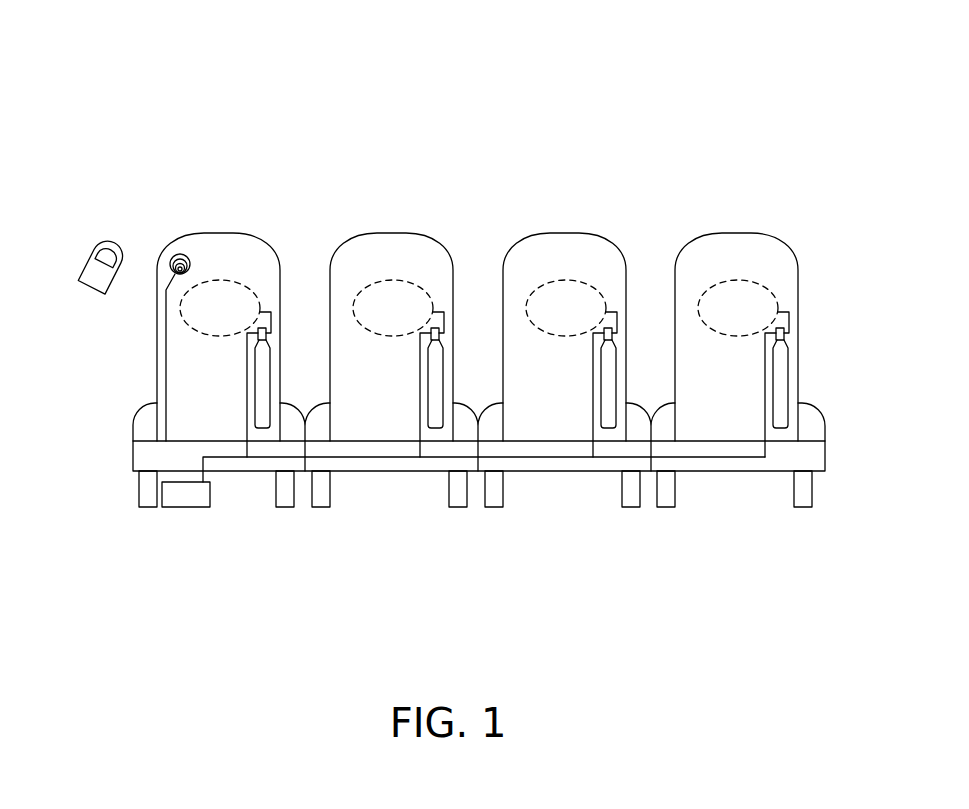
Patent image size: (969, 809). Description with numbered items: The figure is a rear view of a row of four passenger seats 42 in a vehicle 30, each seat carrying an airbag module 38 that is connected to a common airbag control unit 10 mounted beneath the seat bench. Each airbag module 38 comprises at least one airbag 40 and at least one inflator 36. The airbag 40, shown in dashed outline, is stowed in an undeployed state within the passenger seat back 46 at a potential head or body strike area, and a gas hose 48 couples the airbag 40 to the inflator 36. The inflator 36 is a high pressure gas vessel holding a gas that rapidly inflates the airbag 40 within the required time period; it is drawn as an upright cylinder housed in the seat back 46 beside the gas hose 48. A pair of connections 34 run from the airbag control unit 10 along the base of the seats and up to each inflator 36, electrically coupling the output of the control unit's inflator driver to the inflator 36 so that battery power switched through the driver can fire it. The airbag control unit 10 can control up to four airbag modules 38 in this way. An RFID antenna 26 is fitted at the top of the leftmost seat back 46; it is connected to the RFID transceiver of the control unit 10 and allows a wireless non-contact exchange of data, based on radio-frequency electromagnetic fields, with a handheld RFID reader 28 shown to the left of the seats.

The airbag control unit 10 is at (191, 495).
The RFID antenna 26 is at (180, 254).
The RFID reader 28 is at (93, 268).
The vehicle 30 is at (590, 151).
The connections 34 is at (247, 432).
The inflator 36 is at (262, 367).
The airbag module 38 is at (262, 259).
The airbag 40 is at (212, 309).
The passenger seat 42 is at (156, 363).
The passenger seat back 46 is at (212, 256).
The gas hose 48 is at (272, 310).